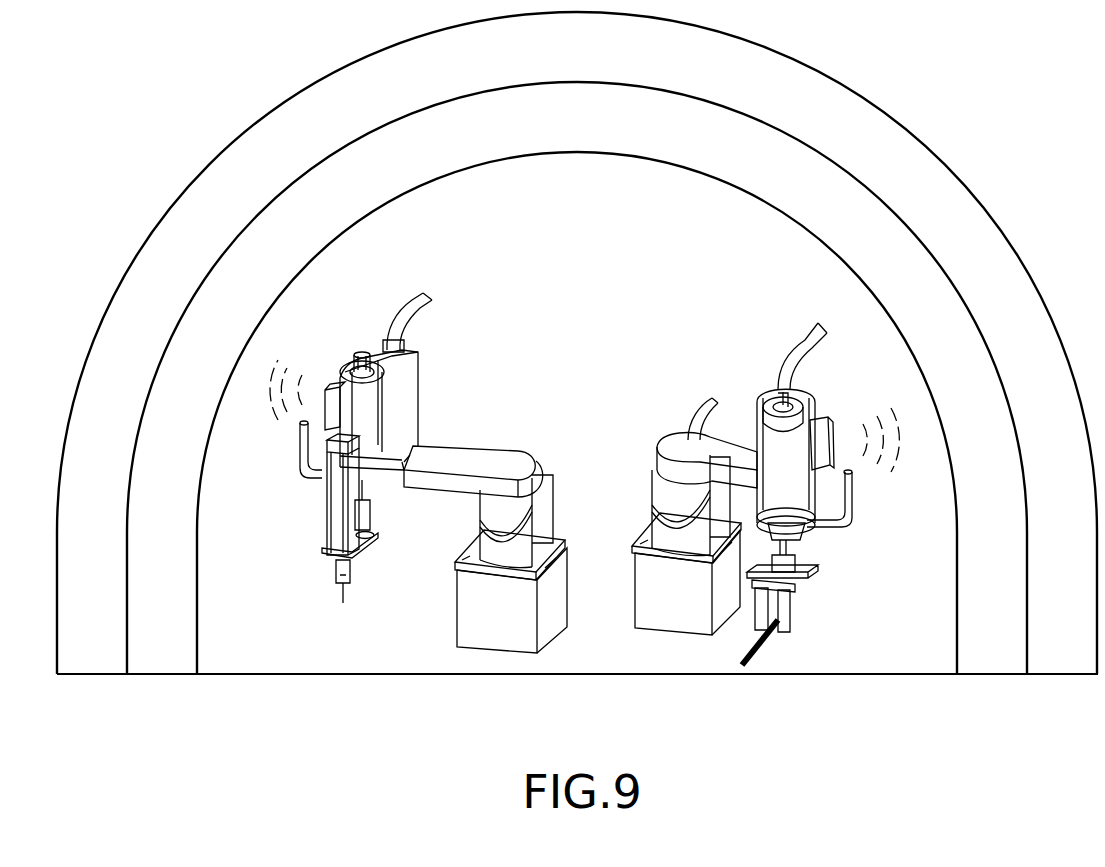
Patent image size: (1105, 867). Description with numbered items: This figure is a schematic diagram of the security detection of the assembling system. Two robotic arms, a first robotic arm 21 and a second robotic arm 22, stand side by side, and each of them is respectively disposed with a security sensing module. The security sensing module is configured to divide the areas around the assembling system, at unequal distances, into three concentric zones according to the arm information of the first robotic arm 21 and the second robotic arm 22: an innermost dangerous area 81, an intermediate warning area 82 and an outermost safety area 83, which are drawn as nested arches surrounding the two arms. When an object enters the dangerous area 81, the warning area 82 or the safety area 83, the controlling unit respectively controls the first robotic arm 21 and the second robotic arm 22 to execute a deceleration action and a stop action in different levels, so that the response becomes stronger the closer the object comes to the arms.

The first robotic arm 21 is at (418, 473).
The second robotic arm 22 is at (765, 466).
The dangerous area 81 is at (875, 663).
The warning area 82 is at (995, 663).
The safety area 83 is at (1063, 663).